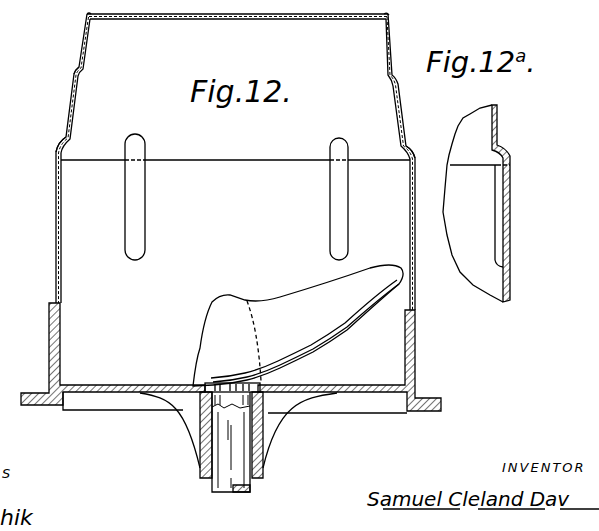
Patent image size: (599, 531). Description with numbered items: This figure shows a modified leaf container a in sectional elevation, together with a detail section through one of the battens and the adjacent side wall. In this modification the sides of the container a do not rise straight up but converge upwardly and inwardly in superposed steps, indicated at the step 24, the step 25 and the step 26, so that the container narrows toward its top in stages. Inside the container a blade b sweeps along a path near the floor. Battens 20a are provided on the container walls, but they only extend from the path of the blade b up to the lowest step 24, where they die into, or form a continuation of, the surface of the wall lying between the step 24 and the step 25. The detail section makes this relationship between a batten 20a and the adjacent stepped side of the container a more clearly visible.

In FIG. 12, the batten 20a is at (138, 210).
In FIG. 12A, the batten 20a is at (497, 213).
In FIG. 12, the step 24 is at (237, 144).
In FIG. 12, the step 25 is at (63, 74).
In FIG. 12, the step 26 is at (239, 17).
In FIG. 12, the leaf container a is at (231, 253).
In FIG. 12A, the leaf container a is at (476, 203).
In FIG. 12, the blade b is at (298, 325).